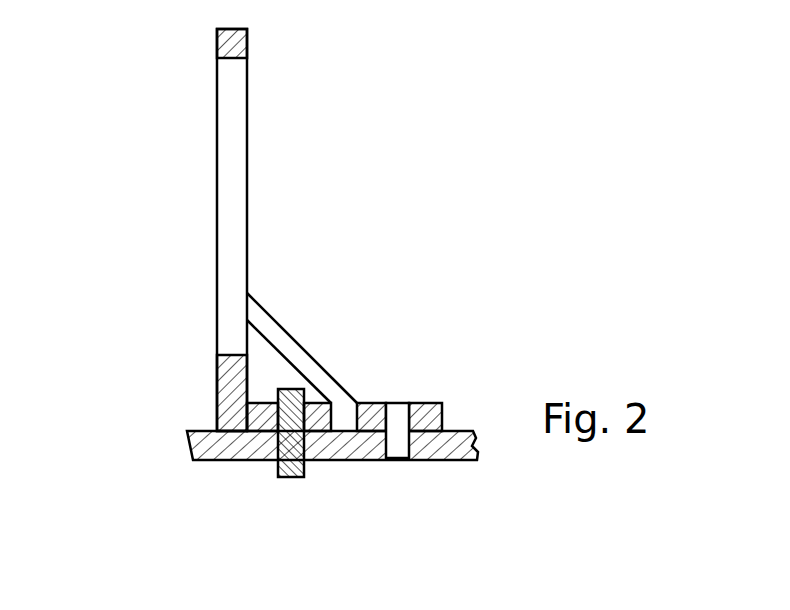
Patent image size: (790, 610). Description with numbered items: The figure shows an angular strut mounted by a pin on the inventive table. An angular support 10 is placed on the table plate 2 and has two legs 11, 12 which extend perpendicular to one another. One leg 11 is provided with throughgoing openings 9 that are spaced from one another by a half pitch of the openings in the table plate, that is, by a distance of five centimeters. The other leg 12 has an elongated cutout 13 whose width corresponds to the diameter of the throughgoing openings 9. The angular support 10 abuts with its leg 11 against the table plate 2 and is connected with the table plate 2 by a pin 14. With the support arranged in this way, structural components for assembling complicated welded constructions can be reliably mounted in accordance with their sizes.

The table plate 2 is at (228, 450).
The throughgoing openings 9 is at (400, 410).
The angular support 10 is at (187, 133).
The leg 11 is at (372, 418).
The leg 12 is at (227, 393).
The elongated cutout 13 is at (228, 263).
The pin 14 is at (283, 477).